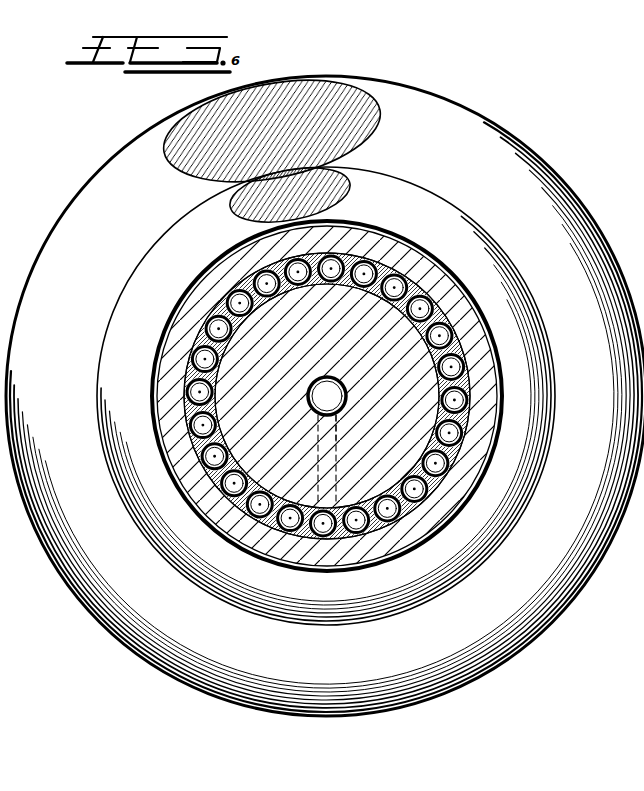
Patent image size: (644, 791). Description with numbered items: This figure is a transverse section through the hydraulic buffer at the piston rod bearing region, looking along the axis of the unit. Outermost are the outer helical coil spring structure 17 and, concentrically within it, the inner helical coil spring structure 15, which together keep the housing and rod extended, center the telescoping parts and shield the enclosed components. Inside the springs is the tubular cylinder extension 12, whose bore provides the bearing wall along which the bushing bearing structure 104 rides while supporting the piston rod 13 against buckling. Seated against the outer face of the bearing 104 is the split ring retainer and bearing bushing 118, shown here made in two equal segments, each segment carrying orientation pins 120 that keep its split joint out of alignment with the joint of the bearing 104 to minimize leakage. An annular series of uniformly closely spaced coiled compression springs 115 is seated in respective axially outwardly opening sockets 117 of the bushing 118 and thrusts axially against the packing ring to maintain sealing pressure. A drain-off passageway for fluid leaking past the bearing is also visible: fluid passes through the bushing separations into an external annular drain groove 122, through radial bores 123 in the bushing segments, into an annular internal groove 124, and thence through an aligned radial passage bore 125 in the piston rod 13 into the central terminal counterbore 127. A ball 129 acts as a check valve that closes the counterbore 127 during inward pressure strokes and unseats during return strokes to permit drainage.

The outer helical coil spring structure 17 is at (375, 61).
The inner helical coil spring structure 15 is at (369, 171).
The tubular cylinder extension 12 is at (433, 270).
The piston rod 13 is at (328, 360).
The bushing bearing structure 104 is at (292, 545).
The coiled compression springs 115 is at (459, 381).
The sockets 117 is at (465, 371).
The split ring retainer and bearing bushing 118 is at (463, 335).
The orientation pins 120 is at (243, 333).
The external annular drain groove 122 is at (205, 480).
The radial bores 123 is at (466, 287).
The annular internal groove 124 is at (344, 352).
The radial passage bore 125 is at (336, 432).
The terminal counterbore 127 is at (312, 401).
The ball 129 is at (330, 402).